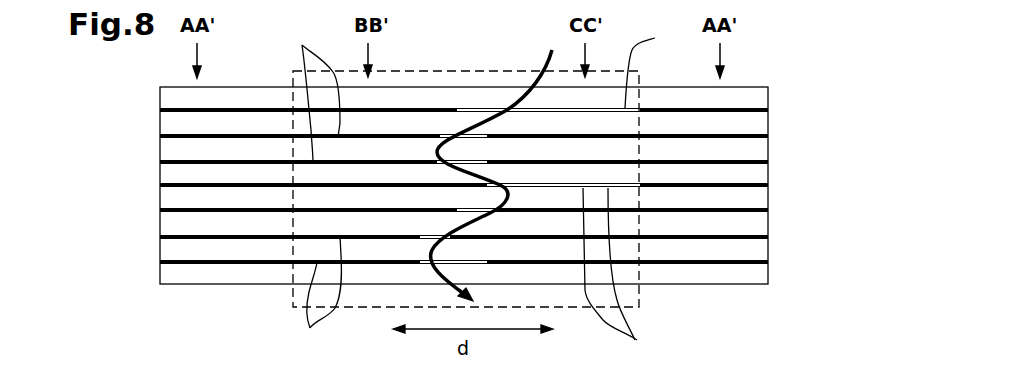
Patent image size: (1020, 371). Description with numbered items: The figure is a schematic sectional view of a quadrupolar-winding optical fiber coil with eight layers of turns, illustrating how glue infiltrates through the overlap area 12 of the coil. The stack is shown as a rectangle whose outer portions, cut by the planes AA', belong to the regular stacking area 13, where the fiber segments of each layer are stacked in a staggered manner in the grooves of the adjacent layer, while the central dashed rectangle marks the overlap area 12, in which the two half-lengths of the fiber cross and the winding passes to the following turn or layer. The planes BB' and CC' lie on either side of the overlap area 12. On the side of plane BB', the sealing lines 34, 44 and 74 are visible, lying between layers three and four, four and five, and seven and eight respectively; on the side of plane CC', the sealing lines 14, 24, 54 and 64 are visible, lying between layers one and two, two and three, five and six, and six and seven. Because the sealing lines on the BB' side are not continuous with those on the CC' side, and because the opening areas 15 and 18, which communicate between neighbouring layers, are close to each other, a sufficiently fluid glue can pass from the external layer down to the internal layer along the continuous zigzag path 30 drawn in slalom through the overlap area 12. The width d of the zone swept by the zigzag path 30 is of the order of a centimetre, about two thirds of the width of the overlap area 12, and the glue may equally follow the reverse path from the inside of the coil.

The overlap area 12 is at (377, 308).
The regular stacking area 13 is at (238, 286).
The sealing line 14 is at (160, 262).
The opening 15 is at (315, 189).
The opening 18 is at (627, 190).
The sealing line 24 is at (160, 237).
The zigzag path 30 is at (551, 61).
The sealing line 34 is at (160, 210).
The sealing line 44 is at (160, 185).
The sealing line 54 is at (160, 162).
The sealing line 64 is at (160, 136).
The sealing line 74 is at (160, 110).